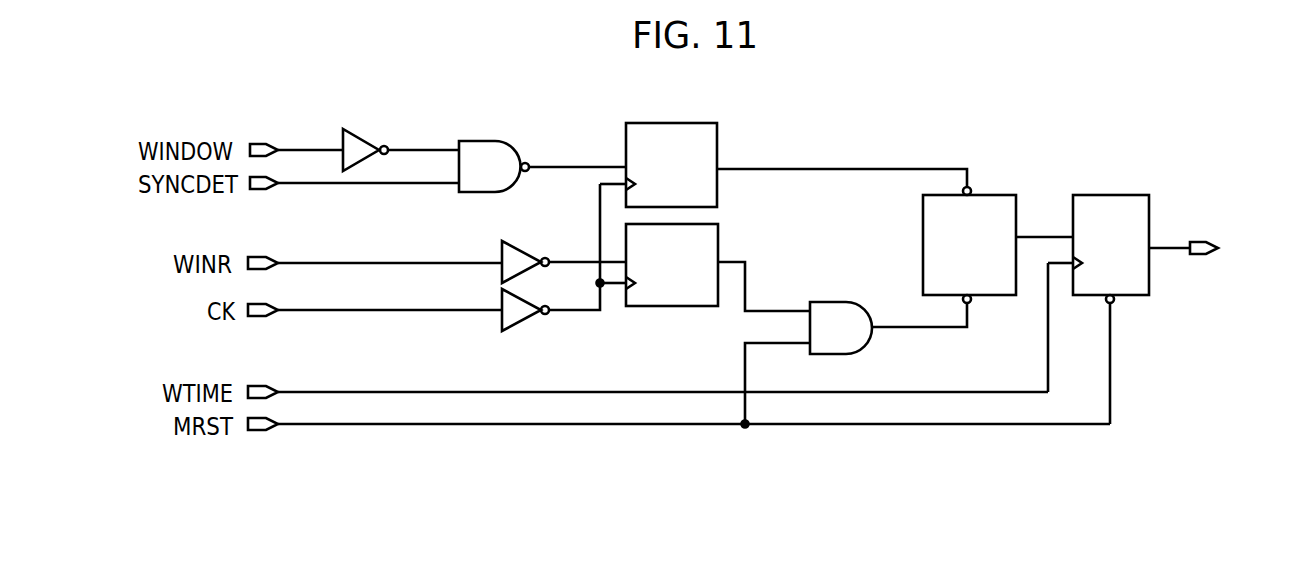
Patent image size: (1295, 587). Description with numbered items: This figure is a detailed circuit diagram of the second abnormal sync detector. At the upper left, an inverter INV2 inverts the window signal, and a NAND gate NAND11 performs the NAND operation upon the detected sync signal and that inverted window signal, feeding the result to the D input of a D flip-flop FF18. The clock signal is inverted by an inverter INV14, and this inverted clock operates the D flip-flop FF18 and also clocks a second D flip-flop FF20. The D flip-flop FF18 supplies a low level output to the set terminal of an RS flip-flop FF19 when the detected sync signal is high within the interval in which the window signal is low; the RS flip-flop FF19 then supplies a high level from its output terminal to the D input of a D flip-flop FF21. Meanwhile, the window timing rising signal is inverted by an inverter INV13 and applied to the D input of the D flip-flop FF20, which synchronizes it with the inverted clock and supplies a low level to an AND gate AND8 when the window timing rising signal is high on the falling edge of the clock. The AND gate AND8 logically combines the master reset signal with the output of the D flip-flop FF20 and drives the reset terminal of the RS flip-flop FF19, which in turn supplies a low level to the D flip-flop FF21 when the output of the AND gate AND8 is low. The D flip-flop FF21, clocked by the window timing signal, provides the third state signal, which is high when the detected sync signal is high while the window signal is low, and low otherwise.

The inverter INV2 is at (365, 140).
The NAND gate NAND11 is at (536, 118).
The D flip-flop FF18 is at (718, 141).
The inverter INV13 is at (524, 250).
The inverter INV14 is at (532, 318).
The D flip-flop FF20 is at (718, 240).
The AND gate AND8 is at (848, 303).
The RS flip-flop FF19 is at (1005, 195).
The D flip-flop FF21 is at (1137, 195).